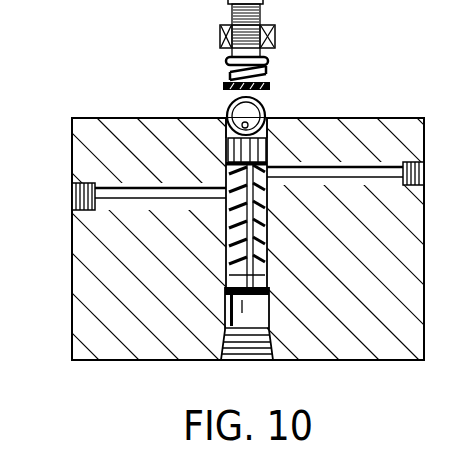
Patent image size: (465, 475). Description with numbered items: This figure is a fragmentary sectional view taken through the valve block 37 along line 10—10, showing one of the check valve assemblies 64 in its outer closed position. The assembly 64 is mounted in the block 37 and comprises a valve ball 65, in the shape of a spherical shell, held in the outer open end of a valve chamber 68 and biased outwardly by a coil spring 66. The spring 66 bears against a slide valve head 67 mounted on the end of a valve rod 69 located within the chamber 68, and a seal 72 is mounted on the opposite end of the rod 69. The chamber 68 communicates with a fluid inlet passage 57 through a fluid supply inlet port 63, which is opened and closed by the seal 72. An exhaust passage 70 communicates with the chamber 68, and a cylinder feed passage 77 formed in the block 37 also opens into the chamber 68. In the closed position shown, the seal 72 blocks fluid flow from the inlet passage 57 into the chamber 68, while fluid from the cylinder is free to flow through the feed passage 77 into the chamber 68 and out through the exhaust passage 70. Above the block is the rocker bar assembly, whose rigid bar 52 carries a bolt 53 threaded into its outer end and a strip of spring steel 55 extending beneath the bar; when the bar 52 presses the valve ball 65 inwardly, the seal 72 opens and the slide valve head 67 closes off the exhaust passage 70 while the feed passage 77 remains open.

The mechanism assembly 10 is at (403, 0).
The valve block 37 is at (110, 108).
The rigid bar 52 is at (221, 41).
The first pair of bolts 53 is at (274, 42).
The strip of spring steel 55 is at (222, 86).
The fluid inlet passage 57 is at (222, 360).
The fluid supply inlet port 63 is at (267, 282).
The check valve assembly 64 is at (278, 115).
The valve ball 65 is at (228, 117).
The coil spring 66 is at (229, 256).
The slide valve head 67 is at (268, 149).
The valve chamber 68 is at (228, 286).
The valve rod 69 is at (268, 208).
The exhaust passage 70 is at (368, 170).
The seal 72 is at (269, 308).
The cylinder feed passage 77 is at (130, 198).